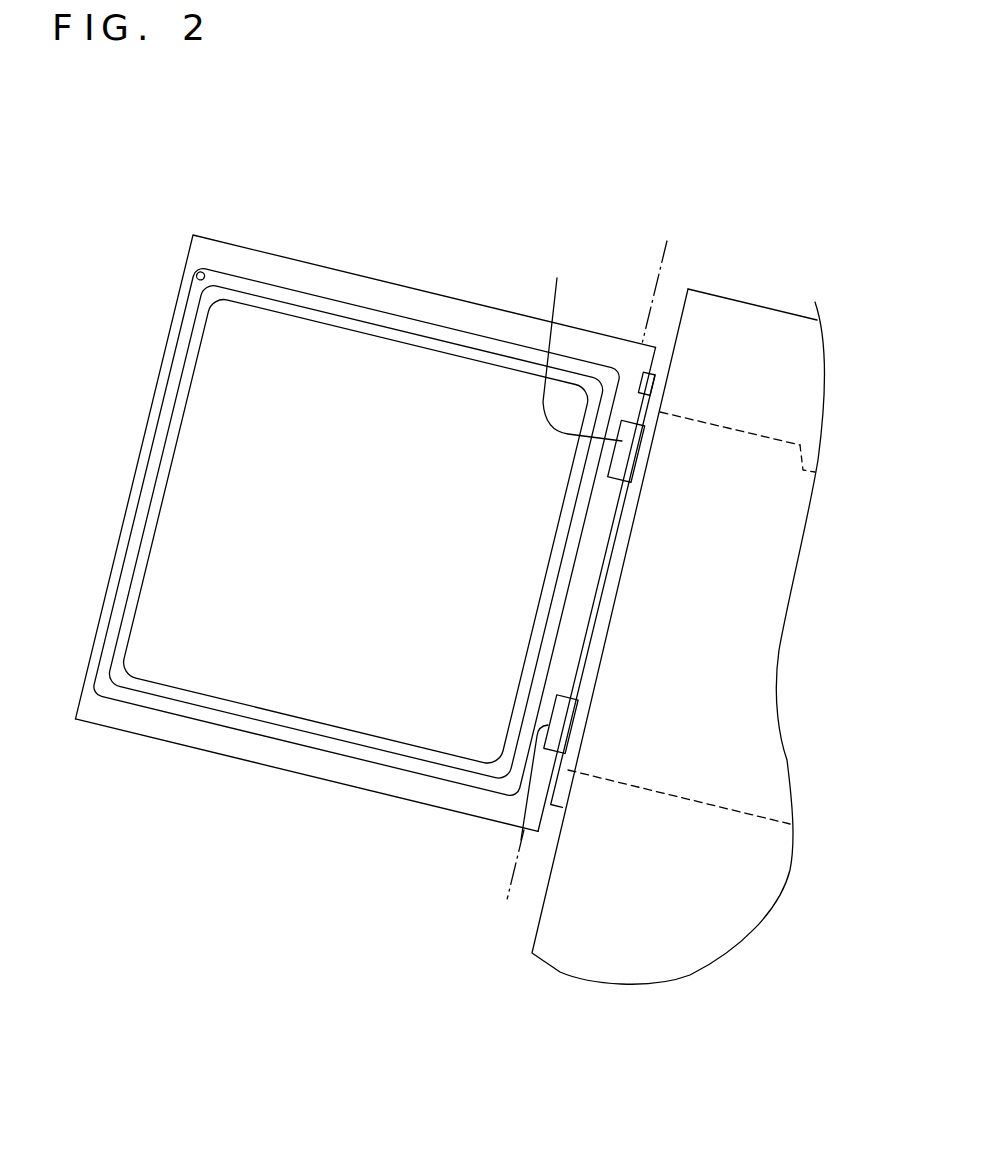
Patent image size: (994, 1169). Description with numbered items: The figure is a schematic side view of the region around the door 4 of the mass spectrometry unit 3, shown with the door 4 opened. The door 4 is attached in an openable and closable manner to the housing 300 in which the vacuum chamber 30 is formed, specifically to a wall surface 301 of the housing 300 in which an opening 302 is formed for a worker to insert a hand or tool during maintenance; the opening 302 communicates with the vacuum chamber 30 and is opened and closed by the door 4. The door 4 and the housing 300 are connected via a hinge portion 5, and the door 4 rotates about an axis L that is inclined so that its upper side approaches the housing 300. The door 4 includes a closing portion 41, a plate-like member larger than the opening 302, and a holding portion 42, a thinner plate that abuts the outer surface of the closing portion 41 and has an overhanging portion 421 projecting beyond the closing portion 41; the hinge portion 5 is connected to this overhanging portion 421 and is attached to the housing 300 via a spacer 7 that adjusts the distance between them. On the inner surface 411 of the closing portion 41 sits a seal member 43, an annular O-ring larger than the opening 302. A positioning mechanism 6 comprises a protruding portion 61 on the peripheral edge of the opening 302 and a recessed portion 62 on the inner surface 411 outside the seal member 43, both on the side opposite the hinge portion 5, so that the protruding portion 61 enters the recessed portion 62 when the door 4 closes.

The mass spectrometry unit 3 is at (640, 664).
The door 4 is at (108, 730).
The hinge portion 5 is at (550, 340).
The positioning mechanism 6 is at (373, 286).
The spacer 7 is at (637, 460).
The vacuum chamber 30 is at (760, 758).
The closing portion 41 is at (365, 767).
The holding portion 42 is at (212, 242).
The seal member 43 is at (375, 325).
The protruding portion 61 is at (645, 387).
The recessed portion 62 is at (198, 277).
The housing 300 is at (782, 313).
The wall surface 301 is at (527, 930).
The opening 302 is at (815, 472).
The inner surface 411 is at (205, 676).
The overhanging portion 421 is at (593, 569).
The axis L is at (655, 288).